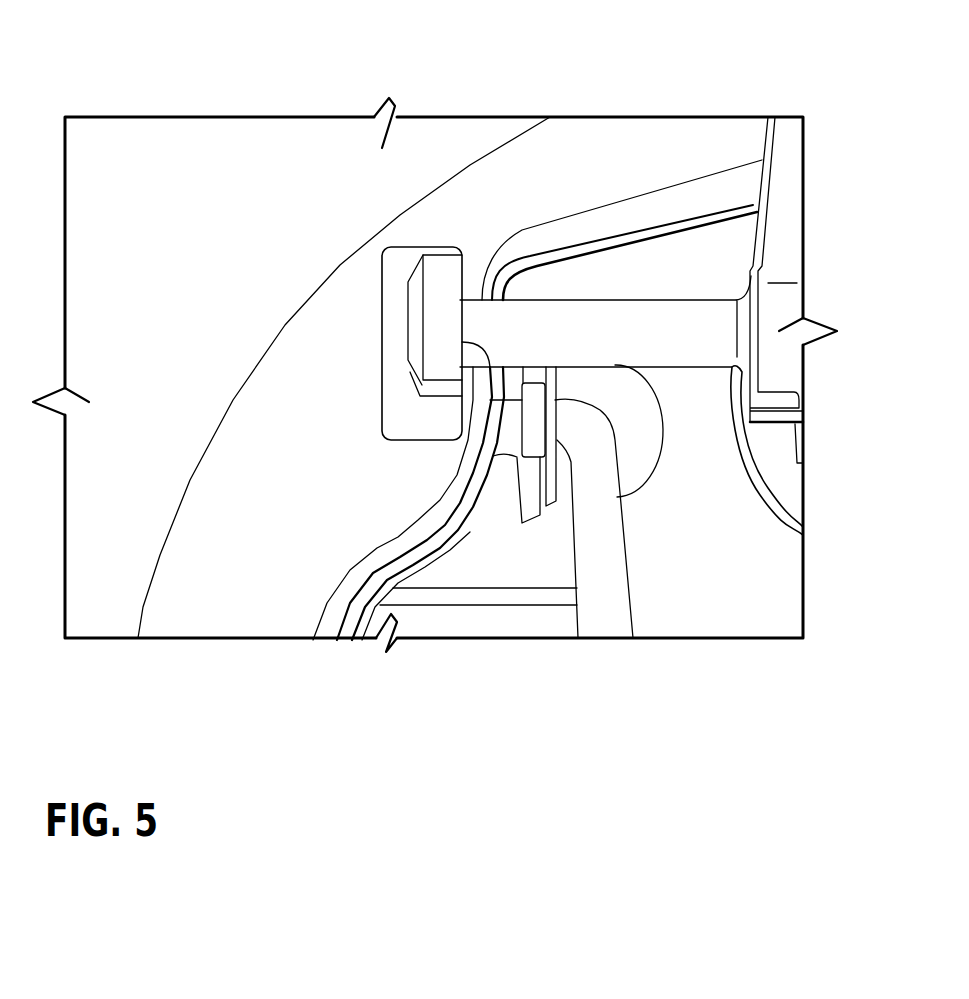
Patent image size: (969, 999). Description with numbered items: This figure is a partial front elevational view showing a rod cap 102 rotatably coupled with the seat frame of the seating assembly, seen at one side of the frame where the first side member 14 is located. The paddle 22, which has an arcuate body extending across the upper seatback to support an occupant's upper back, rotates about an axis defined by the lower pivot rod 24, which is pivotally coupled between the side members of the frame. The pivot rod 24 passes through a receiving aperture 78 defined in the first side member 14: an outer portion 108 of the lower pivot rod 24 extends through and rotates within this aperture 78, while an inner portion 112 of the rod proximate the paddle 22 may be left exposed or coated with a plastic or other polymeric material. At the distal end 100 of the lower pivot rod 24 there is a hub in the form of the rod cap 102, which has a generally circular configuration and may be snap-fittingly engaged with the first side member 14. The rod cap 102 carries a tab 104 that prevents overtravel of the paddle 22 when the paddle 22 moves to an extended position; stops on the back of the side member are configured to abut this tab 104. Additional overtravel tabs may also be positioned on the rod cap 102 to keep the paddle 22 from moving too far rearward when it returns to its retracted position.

The first side member 14 is at (208, 597).
The paddle 22 is at (783, 210).
The lower pivot rod 24 is at (607, 330).
The aperture 78 is at (420, 425).
The distal end 100 is at (528, 327).
The rod cap 102 is at (440, 265).
The tab 104 is at (418, 385).
The outer portion 108 is at (470, 497).
The inner portion 112 is at (687, 323).